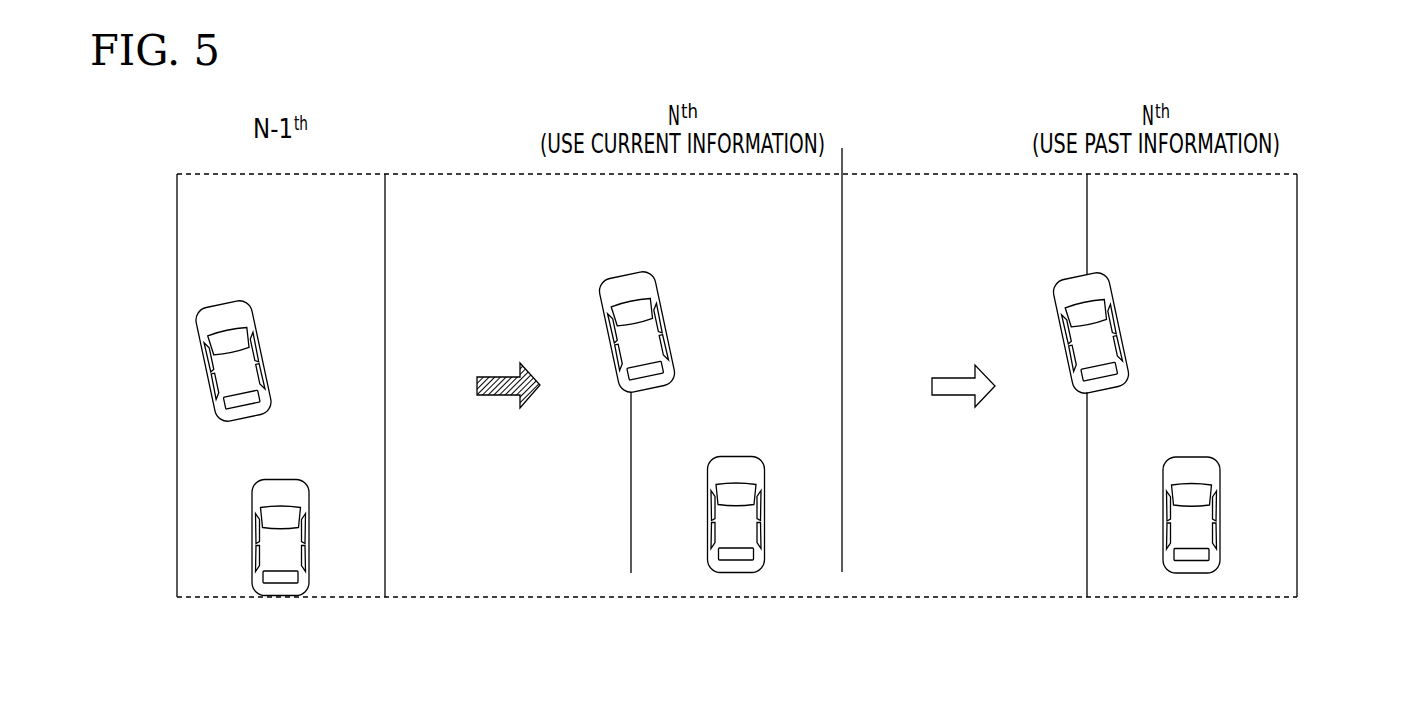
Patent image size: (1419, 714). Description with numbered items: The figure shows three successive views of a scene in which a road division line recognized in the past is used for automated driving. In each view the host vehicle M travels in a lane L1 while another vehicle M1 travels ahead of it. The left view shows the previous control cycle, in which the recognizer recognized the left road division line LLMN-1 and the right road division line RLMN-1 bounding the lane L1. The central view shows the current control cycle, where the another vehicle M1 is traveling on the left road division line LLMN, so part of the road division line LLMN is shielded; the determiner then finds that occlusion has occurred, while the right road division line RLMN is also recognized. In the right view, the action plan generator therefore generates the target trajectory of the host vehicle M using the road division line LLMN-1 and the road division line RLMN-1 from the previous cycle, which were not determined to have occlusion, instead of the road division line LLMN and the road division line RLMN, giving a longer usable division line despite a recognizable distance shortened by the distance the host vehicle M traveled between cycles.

The host vehicle M is at (281, 479).
The another vehicle M1 is at (243, 301).
The lane L1 is at (295, 657).
The left road division line recognized in the N-1th control cycle LLMN-1 is at (1087, 566).
The right road division line recognized in the N-1th control cycle RLMN-1 is at (385, 566).
The left road division line recognized in the Nth control cycle LLMN is at (631, 541).
The right road division line recognized in the Nth control cycle RLMN is at (842, 541).